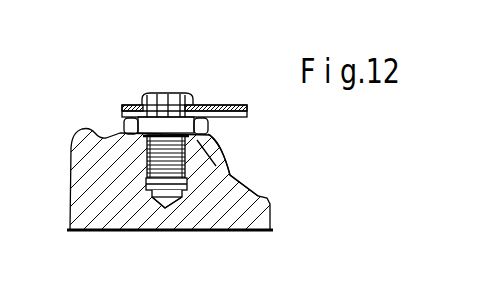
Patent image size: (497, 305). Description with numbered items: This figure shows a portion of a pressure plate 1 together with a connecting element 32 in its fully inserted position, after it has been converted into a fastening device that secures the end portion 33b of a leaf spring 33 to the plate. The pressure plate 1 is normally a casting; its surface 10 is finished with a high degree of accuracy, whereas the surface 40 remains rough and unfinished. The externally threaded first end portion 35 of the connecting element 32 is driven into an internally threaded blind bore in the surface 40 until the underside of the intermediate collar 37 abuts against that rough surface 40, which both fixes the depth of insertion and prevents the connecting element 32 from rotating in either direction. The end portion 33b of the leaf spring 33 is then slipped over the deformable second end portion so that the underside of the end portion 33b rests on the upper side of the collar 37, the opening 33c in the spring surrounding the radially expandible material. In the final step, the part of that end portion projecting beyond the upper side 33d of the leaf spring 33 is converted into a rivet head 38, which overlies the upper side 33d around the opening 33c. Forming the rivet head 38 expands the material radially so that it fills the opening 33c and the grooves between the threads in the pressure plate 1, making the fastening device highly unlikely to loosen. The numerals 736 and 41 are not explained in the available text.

The pressure plate 1 is at (101, 222).
The surface 10 is at (188, 233).
The connecting element 32 is at (218, 133).
The leaf spring 33 is at (240, 98).
The end portion 33b is at (123, 104).
The opening 33c is at (157, 108).
The upper side 33d is at (209, 104).
The first end portion 35 is at (160, 167).
The screw tip 736 is at (167, 198).
The collar 37 is at (208, 125).
The rivet head 38 is at (190, 104).
The surface 40 is at (233, 176).
The support 41 is at (323, 300).